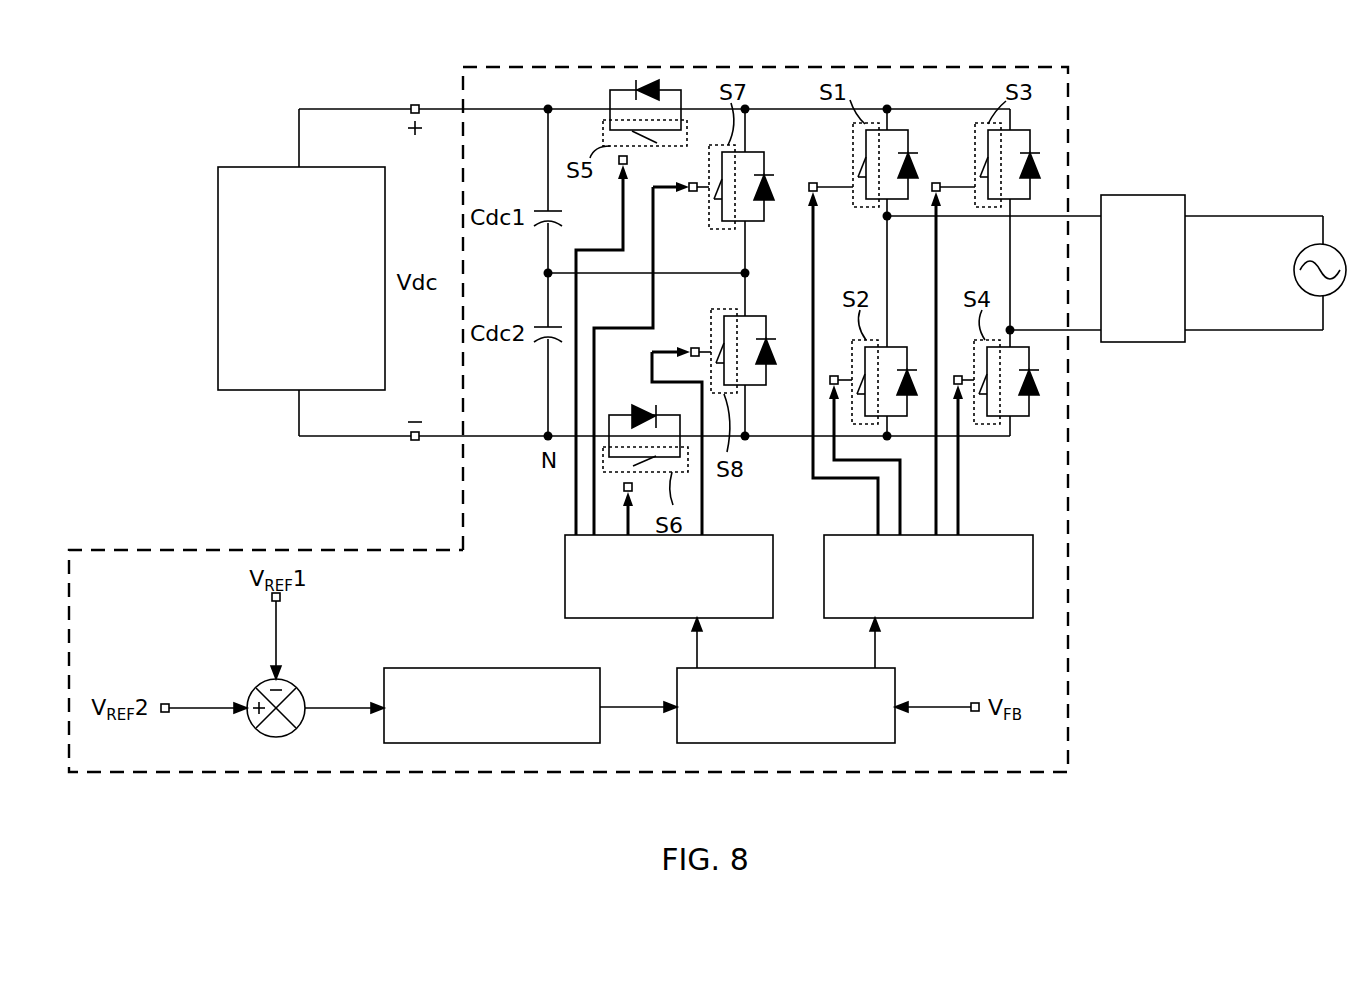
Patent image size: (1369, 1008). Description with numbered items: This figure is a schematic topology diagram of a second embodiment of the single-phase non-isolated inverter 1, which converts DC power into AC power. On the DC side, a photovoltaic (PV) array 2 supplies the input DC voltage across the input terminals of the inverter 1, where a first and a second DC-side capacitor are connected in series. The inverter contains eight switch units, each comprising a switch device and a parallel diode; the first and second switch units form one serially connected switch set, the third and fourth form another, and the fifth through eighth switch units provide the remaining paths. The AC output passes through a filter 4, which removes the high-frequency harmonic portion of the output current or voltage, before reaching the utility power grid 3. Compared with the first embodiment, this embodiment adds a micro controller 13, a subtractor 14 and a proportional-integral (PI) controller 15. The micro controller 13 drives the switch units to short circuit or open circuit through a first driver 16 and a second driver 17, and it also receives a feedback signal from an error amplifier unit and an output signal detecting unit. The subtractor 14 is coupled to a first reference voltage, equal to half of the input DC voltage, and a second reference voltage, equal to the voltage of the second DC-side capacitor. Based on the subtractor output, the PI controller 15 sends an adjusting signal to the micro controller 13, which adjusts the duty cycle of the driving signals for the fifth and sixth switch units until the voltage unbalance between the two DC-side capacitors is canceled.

The single-phase non-isolated inverter 1 is at (1070, 100).
The photovoltaic (PV) array 2 is at (236, 166).
The utility power grid 3 is at (1300, 242).
The filter 4 is at (1183, 190).
The micro controller 13 is at (893, 670).
The subtractor 14 is at (299, 700).
The proportional-integral (PI) controller 15 is at (412, 668).
The first driver 16 is at (1016, 619).
The second driver 17 is at (578, 619).